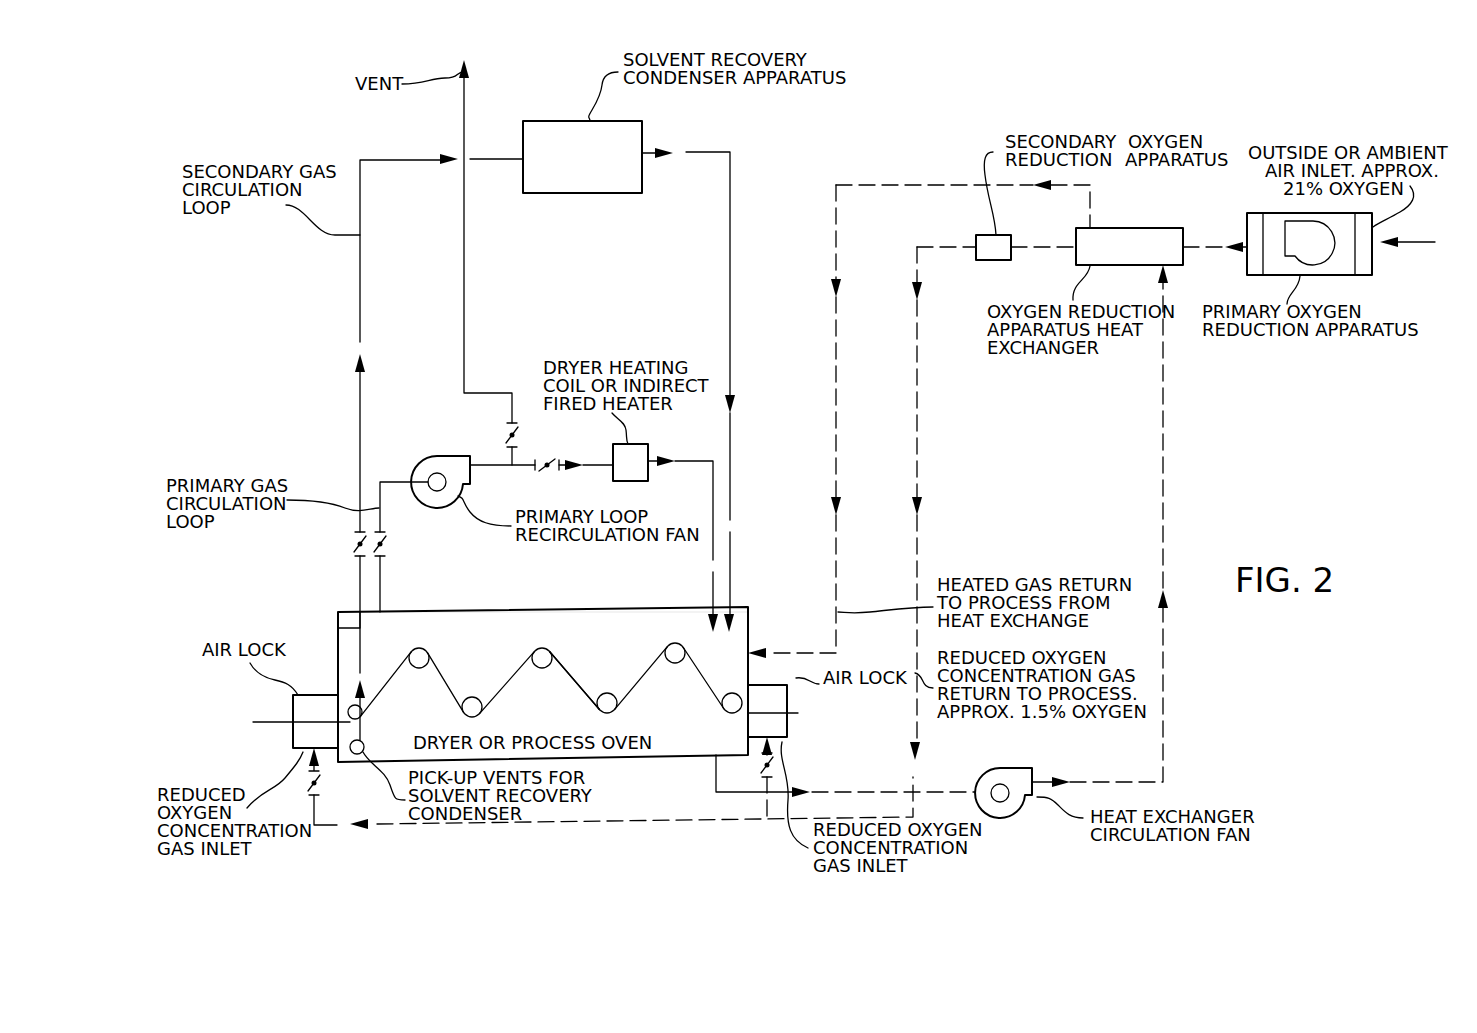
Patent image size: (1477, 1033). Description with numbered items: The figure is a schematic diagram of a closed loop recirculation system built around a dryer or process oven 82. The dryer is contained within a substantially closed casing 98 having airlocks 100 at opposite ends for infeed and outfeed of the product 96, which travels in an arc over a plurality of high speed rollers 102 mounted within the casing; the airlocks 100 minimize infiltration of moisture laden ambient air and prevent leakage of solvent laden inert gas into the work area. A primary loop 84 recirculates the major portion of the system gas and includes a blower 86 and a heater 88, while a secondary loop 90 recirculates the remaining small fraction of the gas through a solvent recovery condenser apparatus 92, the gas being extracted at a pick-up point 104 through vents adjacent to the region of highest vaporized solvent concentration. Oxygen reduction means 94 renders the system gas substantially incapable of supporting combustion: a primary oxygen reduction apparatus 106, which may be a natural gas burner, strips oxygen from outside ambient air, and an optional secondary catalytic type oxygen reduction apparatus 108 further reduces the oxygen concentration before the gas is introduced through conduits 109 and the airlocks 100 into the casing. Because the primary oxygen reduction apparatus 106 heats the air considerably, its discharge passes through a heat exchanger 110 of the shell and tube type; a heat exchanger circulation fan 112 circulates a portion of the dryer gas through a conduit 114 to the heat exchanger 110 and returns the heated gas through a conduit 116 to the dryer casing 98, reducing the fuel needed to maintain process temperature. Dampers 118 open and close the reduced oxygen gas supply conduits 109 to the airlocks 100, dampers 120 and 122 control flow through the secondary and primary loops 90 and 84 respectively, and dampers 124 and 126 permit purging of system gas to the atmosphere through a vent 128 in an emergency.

The dryer or process oven 82 is at (650, 780).
The primary loop 84 is at (381, 593).
The blower 86 is at (420, 464).
The heater 88 is at (650, 444).
The secondary loop 90 is at (722, 152).
The condenser apparatus 92 is at (590, 194).
The oxygen reduction means 94 is at (1231, 196).
The product 96 is at (443, 679).
The casing 98 is at (545, 610).
The airlocks 100 is at (326, 695).
The high speed rollers 102 is at (561, 657).
The pick-up point 104 is at (364, 740).
The primary oxygen reduction apparatus 106 is at (1363, 275).
The secondary catalytic type oxygen reduction apparatus 108 is at (976, 240).
The conduits 109 is at (318, 808).
The heat exchanger 110 is at (1076, 260).
The heat exchanger circulation fan 112 is at (1017, 806).
The conduit 114 is at (862, 792).
The conduit 116 is at (857, 185).
The dampers 118 is at (308, 786).
The damper 120 is at (352, 546).
The damper 122 is at (388, 546).
The damper 124 is at (507, 432).
The damper 126 is at (550, 458).
The vent 128 is at (466, 110).